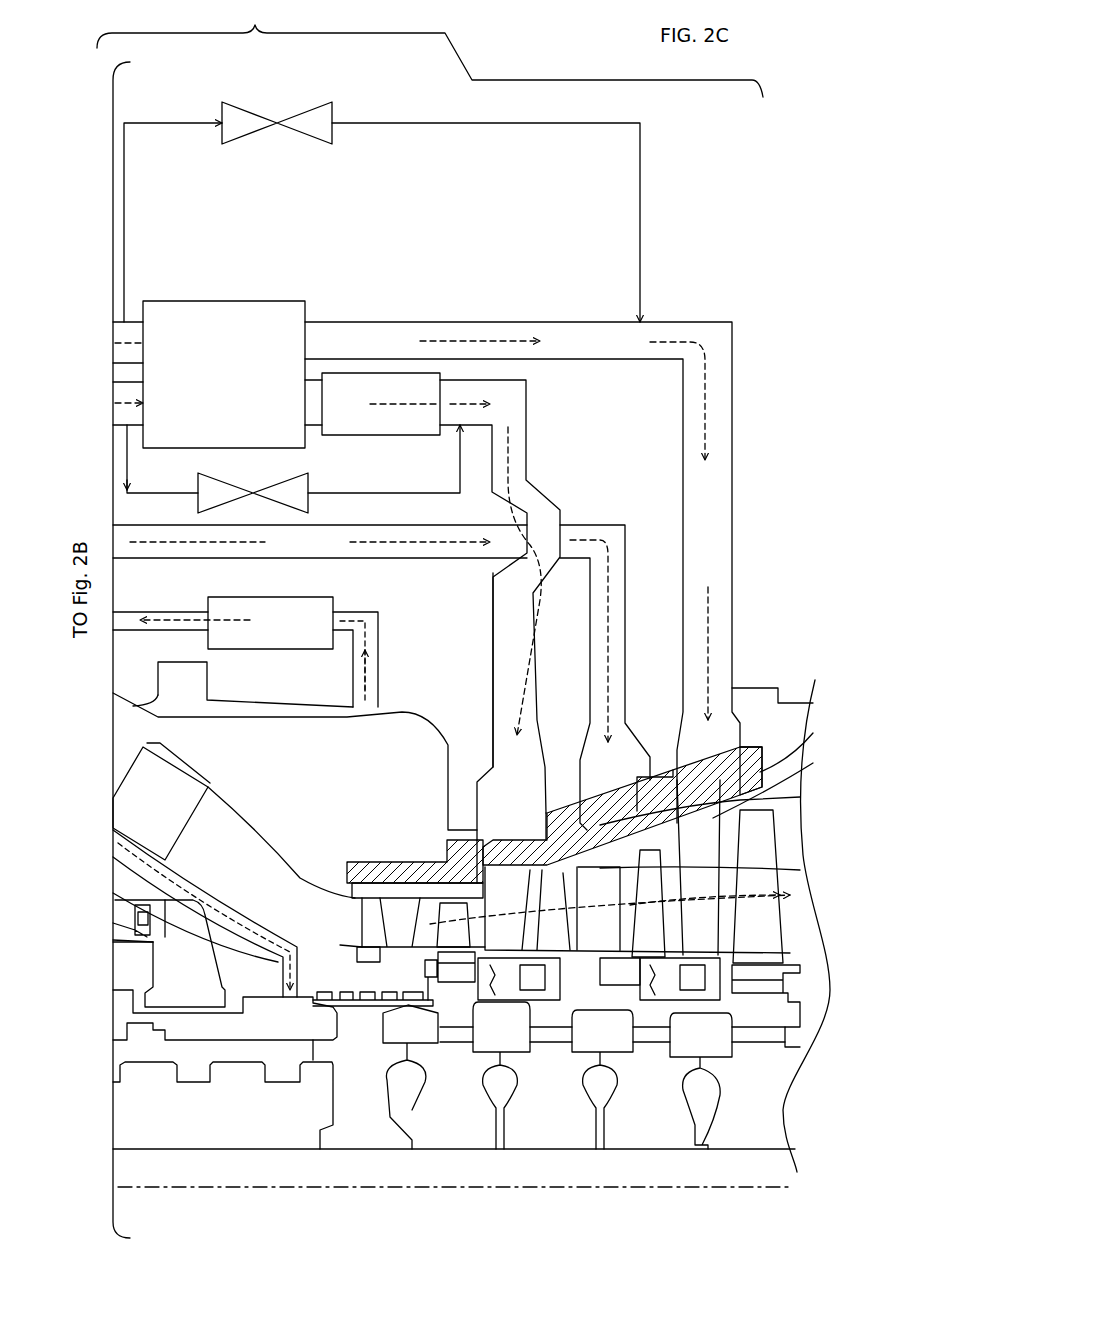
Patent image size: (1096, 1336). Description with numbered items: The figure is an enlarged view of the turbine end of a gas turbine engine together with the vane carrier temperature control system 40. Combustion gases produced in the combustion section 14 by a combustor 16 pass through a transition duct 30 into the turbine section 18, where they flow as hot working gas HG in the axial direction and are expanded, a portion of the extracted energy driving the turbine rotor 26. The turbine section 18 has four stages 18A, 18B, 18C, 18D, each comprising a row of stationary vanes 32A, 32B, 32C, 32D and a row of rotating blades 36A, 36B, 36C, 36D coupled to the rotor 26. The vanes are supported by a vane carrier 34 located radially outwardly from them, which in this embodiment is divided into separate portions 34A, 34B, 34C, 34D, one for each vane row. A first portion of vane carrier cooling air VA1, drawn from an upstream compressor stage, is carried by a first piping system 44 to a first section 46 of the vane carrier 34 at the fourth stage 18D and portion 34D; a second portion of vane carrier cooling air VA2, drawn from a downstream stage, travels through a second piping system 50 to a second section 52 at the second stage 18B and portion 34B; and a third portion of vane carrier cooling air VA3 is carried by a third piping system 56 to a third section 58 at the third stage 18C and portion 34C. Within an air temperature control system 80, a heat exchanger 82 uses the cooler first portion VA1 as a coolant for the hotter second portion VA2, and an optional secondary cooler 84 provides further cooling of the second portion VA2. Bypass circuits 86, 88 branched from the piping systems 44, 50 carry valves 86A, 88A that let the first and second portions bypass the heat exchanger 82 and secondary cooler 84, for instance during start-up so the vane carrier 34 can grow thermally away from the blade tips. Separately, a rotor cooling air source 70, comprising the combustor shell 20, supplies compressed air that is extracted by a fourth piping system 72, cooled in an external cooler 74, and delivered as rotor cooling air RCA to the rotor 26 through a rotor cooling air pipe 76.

The combustion section 14 is at (230, 1163).
The combustor 16 is at (200, 760).
The turbine section 18 is at (678, 1203).
The first turbine stage 18A is at (433, 885).
The second turbine stage 18B is at (535, 963).
The third turbine stage 18C is at (648, 962).
The fourth turbine stage 18D is at (757, 970).
The combustor shell 20 is at (306, 776).
The turbine rotor 26 is at (768, 1060).
The transition duct 30 is at (247, 847).
The first row of stationary vanes 32A is at (405, 950).
The second row of stationary vanes 32B is at (547, 838).
The third row of stationary vanes 32C is at (800, 870).
The fourth row of stationary vanes 32D is at (800, 797).
The vane carrier 34 is at (813, 733).
The first vane carrier portion 34A is at (397, 917).
The second vane carrier portion 34B is at (482, 815).
The third vane carrier portion 34C is at (630, 812).
The fourth vane carrier portion 34D is at (720, 773).
The first row of rotating blades 36A is at (450, 940).
The second row of rotating blades 36B is at (660, 845).
The third row of rotating blades 36C is at (650, 932).
The fourth row of rotating blades 36D is at (763, 833).
The vane carrier temperature control system 40 is at (430, 48).
The first piping system 44 is at (697, 322).
The first section of the vane carrier 46 is at (813, 763).
The second piping system 50 is at (528, 400).
The second section of the vane carrier 52 is at (520, 843).
The third piping system 56 is at (603, 523).
The third section of the vane carrier 58 is at (605, 850).
The rotor cooling air source 70 is at (392, 745).
The fourth piping system 72 is at (358, 612).
The external cooler 74 is at (267, 603).
The rotor cooling air pipe 76 is at (240, 935).
The air temperature control system 80 is at (352, 272).
The heat exchanger 82 is at (220, 300).
The secondary cooler 84 is at (385, 373).
The first bypass circuit 86 is at (165, 128).
The first bypass valve 86A is at (305, 128).
The second bypass circuit 88 is at (146, 490).
The second bypass valve 88A is at (285, 483).
The first portion of vane carrier cooling air VA1 is at (720, 400).
The second portion of vane carrier cooling air VA2 is at (510, 460).
The third portion of vane carrier cooling air VA3 is at (640, 600).
The rotor cooling air RCA is at (355, 678).
The hot working gas HG is at (795, 903).